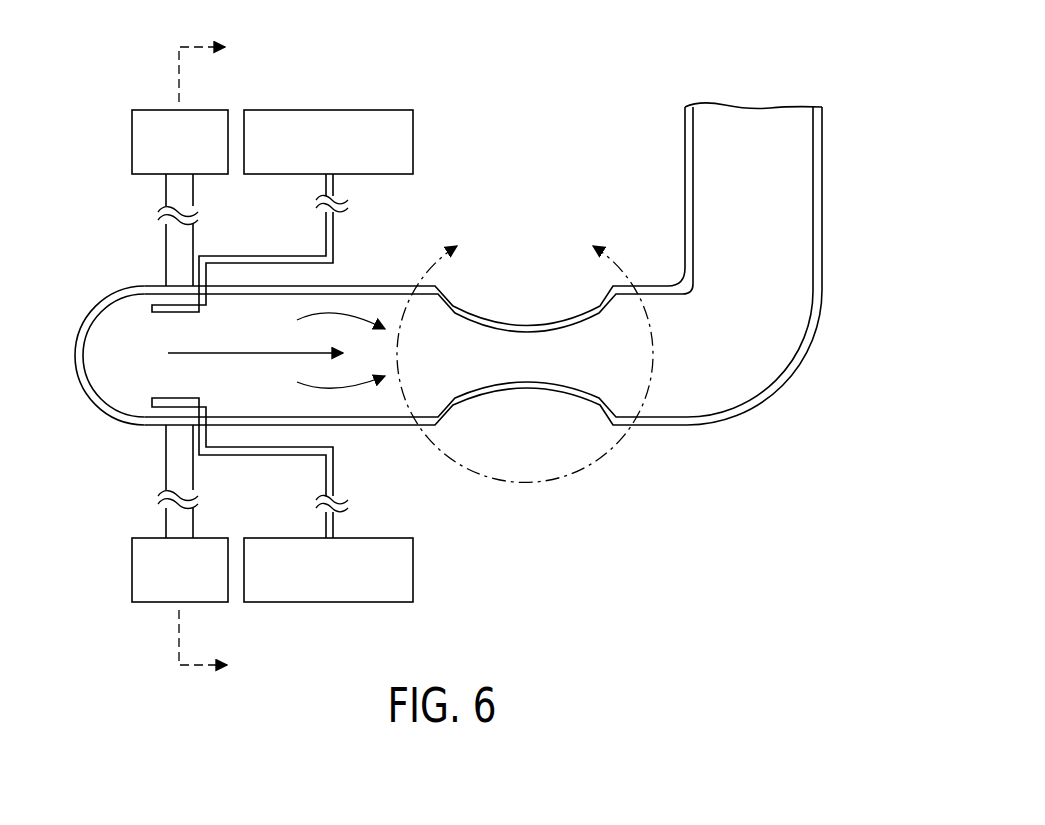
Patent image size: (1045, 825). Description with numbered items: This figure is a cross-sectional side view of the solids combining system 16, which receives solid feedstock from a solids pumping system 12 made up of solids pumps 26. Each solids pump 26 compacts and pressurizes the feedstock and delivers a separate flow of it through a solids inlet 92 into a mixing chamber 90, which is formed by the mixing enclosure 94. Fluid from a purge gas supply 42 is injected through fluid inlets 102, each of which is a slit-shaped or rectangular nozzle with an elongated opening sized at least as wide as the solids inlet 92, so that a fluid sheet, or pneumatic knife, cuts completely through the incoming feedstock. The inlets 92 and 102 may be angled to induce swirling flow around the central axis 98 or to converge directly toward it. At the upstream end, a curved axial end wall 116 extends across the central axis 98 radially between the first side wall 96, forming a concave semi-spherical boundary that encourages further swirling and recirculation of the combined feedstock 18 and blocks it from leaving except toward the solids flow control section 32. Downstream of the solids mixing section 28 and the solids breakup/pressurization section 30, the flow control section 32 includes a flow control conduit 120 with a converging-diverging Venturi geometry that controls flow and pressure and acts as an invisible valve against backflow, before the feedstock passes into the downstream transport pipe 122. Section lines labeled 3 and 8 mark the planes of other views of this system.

The section line 3- 3 is at (206, 356).
The section line 8- 8 is at (525, 350).
The solids pumping system 12 is at (143, 620).
The solids combining system 16 is at (512, 92).
The combined feedstock 18 is at (375, 327).
The solids pump 26 is at (132, 143).
The solids mixing section 28 is at (110, 367).
The solids breakup/pressurization section 30 is at (153, 402).
The solids flow control section 32 is at (552, 447).
The purge gas supply 42 is at (328, 110).
The mixing chamber 90 is at (238, 344).
The solids inlet 92 is at (178, 287).
The mixing enclosure 94 is at (373, 287).
The first side wall 96 is at (382, 426).
The central axis 98 is at (250, 357).
The fluid inlet 102 is at (178, 313).
The axial end wall 116 is at (78, 357).
The flow control conduit 120 is at (547, 355).
The downstream transport pipe 122 is at (702, 155).